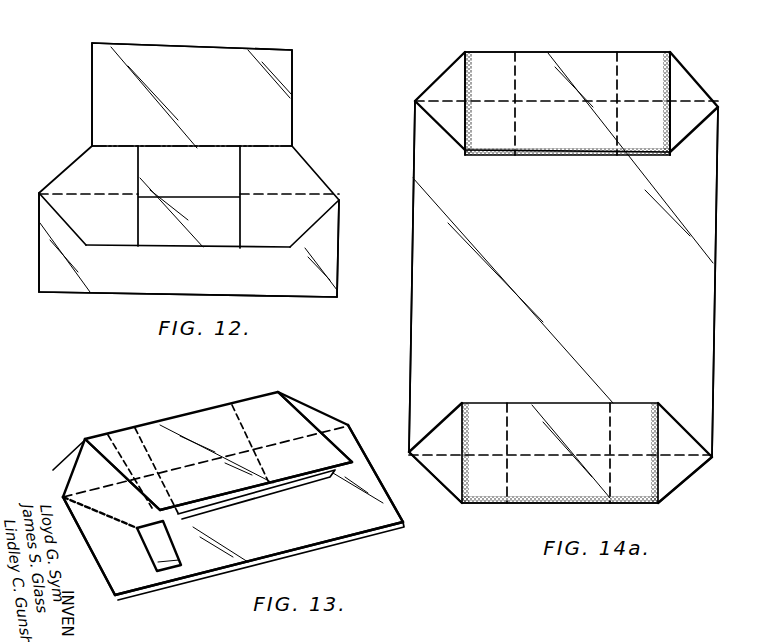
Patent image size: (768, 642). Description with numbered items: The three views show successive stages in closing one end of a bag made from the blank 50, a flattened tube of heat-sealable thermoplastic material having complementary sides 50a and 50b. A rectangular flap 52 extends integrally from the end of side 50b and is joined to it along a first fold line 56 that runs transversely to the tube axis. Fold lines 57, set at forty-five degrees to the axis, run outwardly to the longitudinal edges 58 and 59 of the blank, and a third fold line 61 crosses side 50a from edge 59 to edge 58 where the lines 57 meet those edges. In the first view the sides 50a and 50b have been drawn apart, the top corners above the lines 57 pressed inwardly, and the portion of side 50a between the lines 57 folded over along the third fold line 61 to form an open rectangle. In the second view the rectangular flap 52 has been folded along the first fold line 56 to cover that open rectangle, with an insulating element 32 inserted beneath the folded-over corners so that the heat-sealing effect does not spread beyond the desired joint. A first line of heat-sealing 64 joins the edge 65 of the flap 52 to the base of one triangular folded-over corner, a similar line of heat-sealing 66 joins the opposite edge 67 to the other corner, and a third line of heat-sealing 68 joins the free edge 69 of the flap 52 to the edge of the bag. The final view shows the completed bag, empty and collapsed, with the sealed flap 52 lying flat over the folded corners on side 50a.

In FIG. 13, the insulating element 32 is at (150, 566).
In FIG. 12, the blank 50 is at (328, 306).
In FIG. 13, the blank 50 is at (406, 519).
In FIG. 14a, the blank 50 is at (405, 329).
In FIG. 12, the side of tube 50a is at (216, 277).
In FIG. 13, the side of tube 50a is at (327, 539).
In FIG. 14a, the side of tube 50a is at (566, 292).
In FIG. 13, the side of tube 50b is at (347, 539).
In FIG. 12, the rectangular flap 52 is at (219, 96).
In FIG. 13, the rectangular flap 52 is at (187, 491).
In FIG. 14a, the rectangular flap 52 is at (568, 139).
In FIG. 12, the first fold line 56 is at (187, 147).
In FIG. 13, the first fold line 56 is at (200, 405).
In FIG. 12, the fold lines 57 is at (317, 185).
In FIG. 13, the fold lines 57 is at (361, 438).
In FIG. 14a, the fold lines 57 is at (727, 122).
In FIG. 12, the edge of blank 58 is at (338, 263).
In FIG. 13, the edge of blank 58 is at (392, 499).
In FIG. 14a, the edge of blank 58 is at (713, 392).
In FIG. 12, the edge of blank 59 is at (40, 292).
In FIG. 13, the edge of blank 59 is at (95, 567).
In FIG. 14a, the edge of blank 59 is at (412, 260).
In FIG. 12, the third fold line 61 is at (222, 200).
In FIG. 13, the third fold line 61 is at (291, 446).
In FIG. 14a, the third fold line 61 is at (508, 102).
In FIG. 14a, the first line of heat-sealing 64 is at (463, 150).
In FIG. 12, the edge of flap 65 is at (92, 90).
In FIG. 13, the edge of flap 65 is at (83, 440).
In FIG. 14a, the edge of flap 65 is at (465, 82).
In FIG. 14a, the line of heat-sealing 66 is at (668, 73).
In FIG. 12, the opposite edge of flap 67 is at (293, 108).
In FIG. 13, the opposite edge of flap 67 is at (305, 416).
In FIG. 14a, the opposite edge of flap 67 is at (670, 140).
In FIG. 14a, the third line of heat-sealing 68 is at (552, 155).
In FIG. 12, the edge of flap opposite fold line 69 is at (268, 47).
In FIG. 13, the edge of flap opposite fold line 69 is at (220, 500).
In FIG. 14a, the edge of flap opposite fold line 69 is at (596, 156).